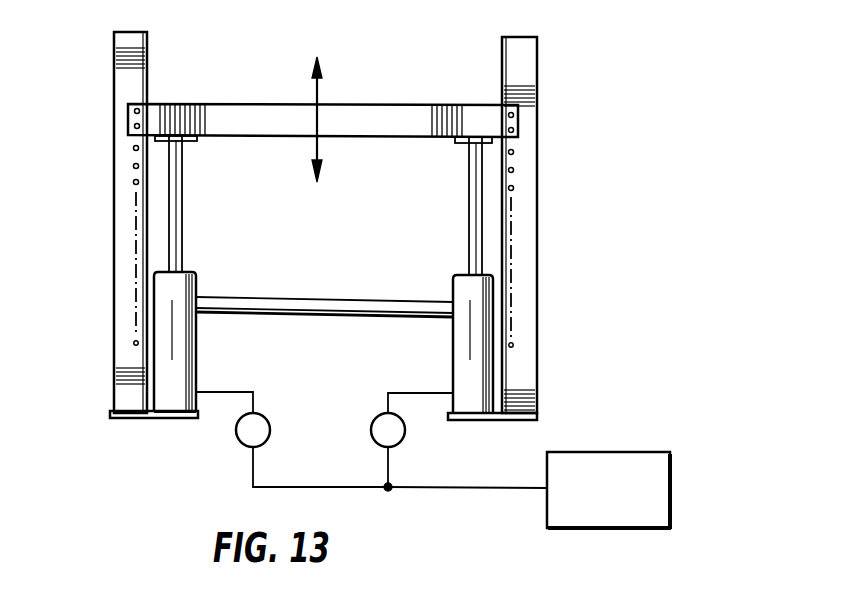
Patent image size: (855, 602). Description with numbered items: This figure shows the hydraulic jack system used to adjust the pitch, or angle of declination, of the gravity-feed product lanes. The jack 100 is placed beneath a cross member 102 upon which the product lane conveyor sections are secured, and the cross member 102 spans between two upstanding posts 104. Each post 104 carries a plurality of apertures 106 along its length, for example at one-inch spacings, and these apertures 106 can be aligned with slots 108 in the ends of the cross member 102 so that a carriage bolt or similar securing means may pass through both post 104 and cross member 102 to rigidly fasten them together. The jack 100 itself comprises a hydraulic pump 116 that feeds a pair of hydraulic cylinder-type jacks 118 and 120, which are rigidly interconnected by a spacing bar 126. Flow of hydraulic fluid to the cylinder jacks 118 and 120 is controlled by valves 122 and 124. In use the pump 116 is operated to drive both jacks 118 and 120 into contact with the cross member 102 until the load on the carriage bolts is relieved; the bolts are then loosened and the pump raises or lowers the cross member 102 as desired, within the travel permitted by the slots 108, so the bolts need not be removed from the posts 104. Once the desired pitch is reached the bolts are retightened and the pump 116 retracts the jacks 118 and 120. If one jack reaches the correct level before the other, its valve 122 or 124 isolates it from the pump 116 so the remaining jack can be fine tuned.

The jack 100 is at (294, 80).
The cross member 102 is at (371, 120).
The upstanding posts 104 is at (128, 212).
The apertures 106 is at (514, 188).
The slots 108 is at (128, 103).
The hydraulic pump 116 is at (650, 462).
The hydraulic cylinder-type jack 118 is at (183, 333).
The hydraulic cylinder-type jack 120 is at (465, 327).
The valve 122 is at (267, 420).
The valve 124 is at (375, 420).
The spacing bar 126 is at (362, 305).